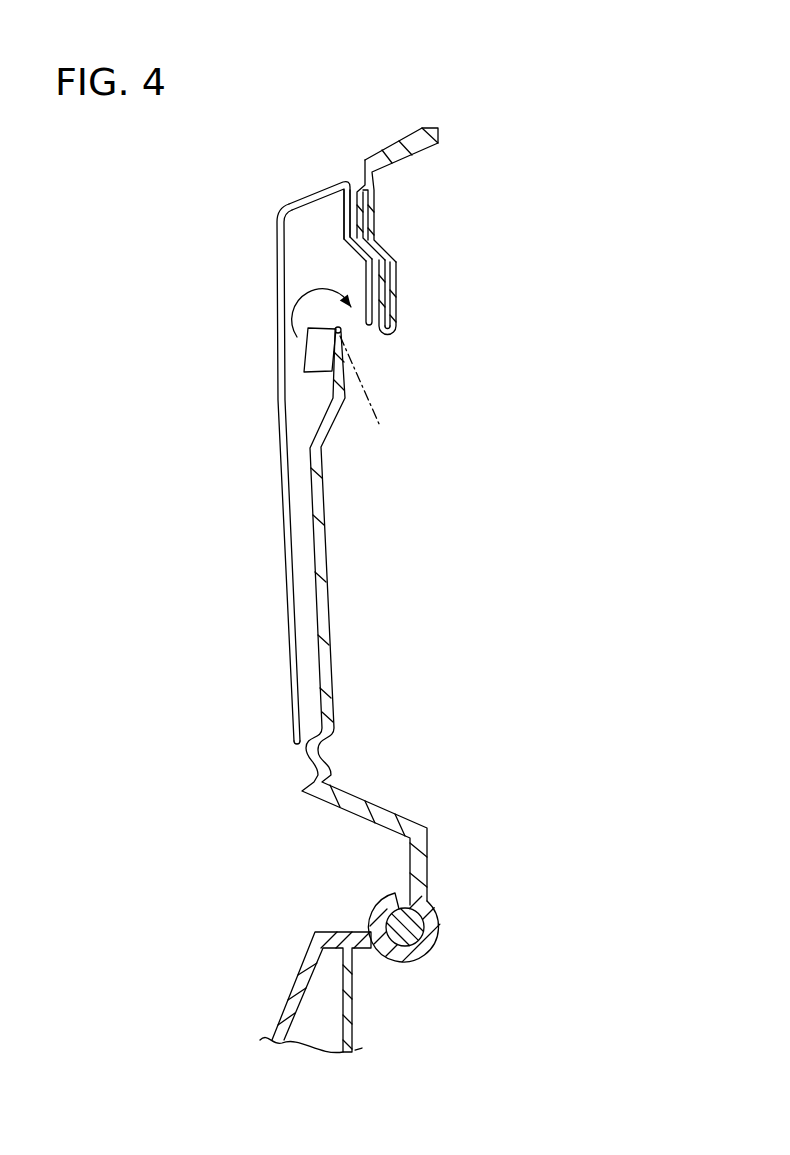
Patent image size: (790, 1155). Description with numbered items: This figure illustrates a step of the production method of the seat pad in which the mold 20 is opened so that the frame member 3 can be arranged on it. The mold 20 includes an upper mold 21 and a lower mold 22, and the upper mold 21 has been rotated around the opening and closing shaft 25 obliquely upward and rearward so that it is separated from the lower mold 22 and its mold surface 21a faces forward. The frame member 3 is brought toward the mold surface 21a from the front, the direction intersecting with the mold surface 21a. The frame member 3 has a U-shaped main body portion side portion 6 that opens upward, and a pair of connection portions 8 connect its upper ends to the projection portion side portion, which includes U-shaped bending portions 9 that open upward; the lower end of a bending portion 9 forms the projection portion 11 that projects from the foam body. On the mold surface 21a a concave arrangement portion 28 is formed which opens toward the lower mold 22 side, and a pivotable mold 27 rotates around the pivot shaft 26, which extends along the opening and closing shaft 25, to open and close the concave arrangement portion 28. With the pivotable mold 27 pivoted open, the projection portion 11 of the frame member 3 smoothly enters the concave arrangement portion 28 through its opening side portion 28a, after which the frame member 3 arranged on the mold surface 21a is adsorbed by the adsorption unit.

The frame member 3 is at (273, 555).
The main body portion side portion 6 is at (283, 448).
The connection portion 8 is at (318, 196).
The bending portion 9 is at (352, 214).
The projection portion 11 is at (378, 327).
The mold 20 is at (592, 99).
The upper mold 21 is at (434, 134).
The mold surface 21a is at (314, 597).
The lower mold 22 is at (352, 1017).
The opening and closing shaft 25 is at (420, 933).
The pivot shaft 26 is at (370, 399).
The pivotable mold 27 is at (318, 350).
The concave arrangement portion 28 is at (377, 290).
The opening side portion 28a is at (360, 327).